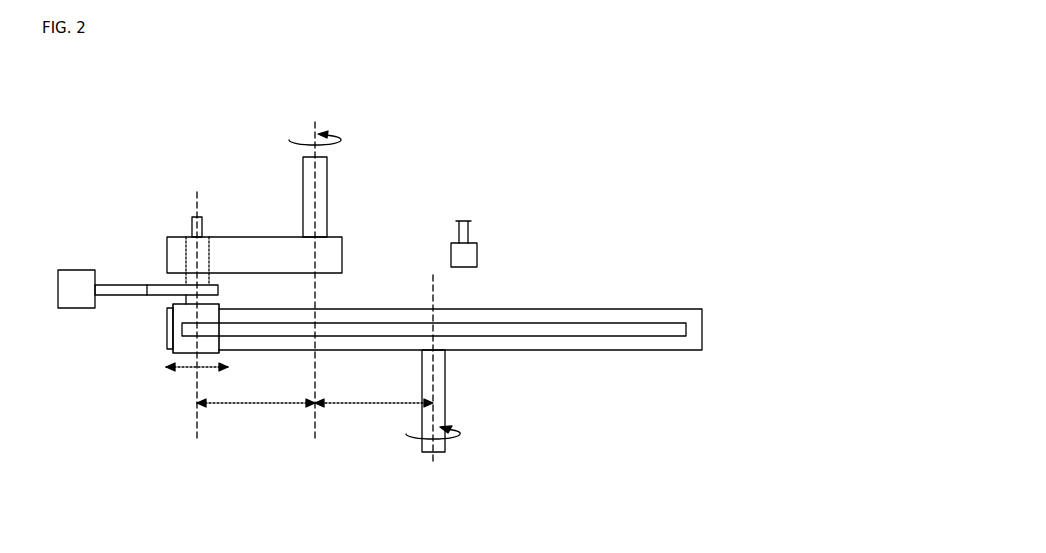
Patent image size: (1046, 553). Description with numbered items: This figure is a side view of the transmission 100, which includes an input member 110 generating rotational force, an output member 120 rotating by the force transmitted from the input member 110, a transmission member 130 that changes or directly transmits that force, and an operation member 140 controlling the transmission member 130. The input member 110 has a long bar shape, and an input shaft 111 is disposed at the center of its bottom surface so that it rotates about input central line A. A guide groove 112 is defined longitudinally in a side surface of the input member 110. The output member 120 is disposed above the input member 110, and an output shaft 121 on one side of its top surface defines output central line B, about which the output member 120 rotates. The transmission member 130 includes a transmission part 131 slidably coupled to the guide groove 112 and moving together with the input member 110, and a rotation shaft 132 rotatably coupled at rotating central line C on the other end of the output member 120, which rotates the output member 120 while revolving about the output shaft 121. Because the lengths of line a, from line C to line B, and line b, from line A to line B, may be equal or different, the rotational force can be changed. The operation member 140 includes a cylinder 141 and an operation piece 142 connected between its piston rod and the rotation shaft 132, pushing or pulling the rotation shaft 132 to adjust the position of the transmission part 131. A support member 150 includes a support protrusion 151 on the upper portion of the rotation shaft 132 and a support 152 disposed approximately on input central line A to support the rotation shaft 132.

The transmission 100 is at (584, 128).
The input member 110 is at (551, 349).
The input shaft 111 is at (444, 408).
The guide groove 112 is at (606, 327).
The output member 120 is at (342, 245).
The output shaft 121 is at (320, 193).
The transmission member 130 is at (136, 339).
The transmission part 131 is at (175, 333).
The rotation shaft 132 is at (176, 302).
The operation member 140 is at (138, 242).
The cylinder 141 is at (80, 276).
The operation piece 142 is at (137, 290).
The support member 150 is at (336, 233).
The support protrusion 151 is at (198, 213).
The support 152 is at (474, 256).